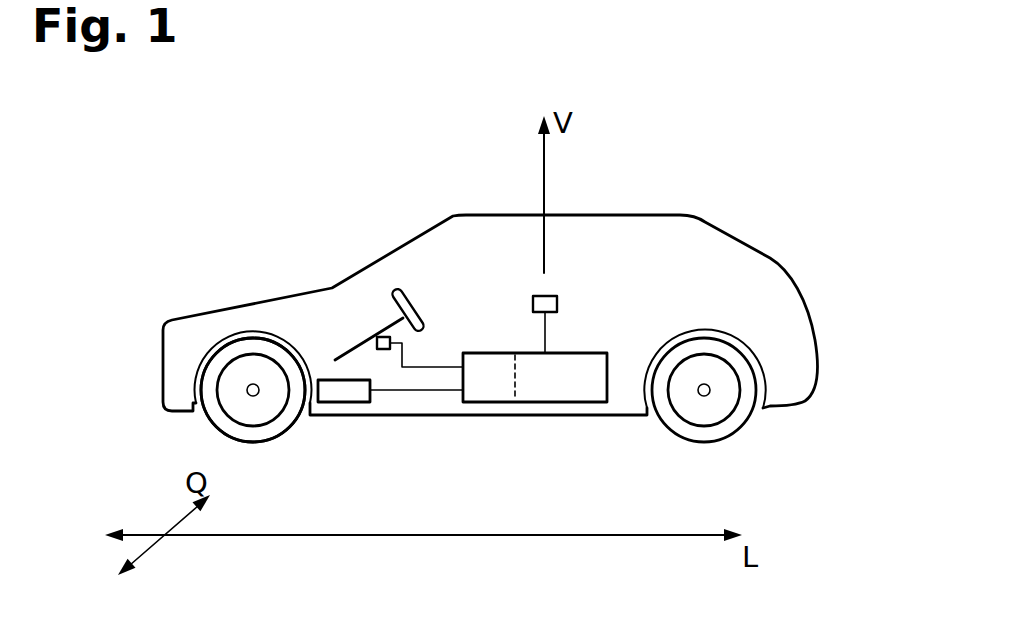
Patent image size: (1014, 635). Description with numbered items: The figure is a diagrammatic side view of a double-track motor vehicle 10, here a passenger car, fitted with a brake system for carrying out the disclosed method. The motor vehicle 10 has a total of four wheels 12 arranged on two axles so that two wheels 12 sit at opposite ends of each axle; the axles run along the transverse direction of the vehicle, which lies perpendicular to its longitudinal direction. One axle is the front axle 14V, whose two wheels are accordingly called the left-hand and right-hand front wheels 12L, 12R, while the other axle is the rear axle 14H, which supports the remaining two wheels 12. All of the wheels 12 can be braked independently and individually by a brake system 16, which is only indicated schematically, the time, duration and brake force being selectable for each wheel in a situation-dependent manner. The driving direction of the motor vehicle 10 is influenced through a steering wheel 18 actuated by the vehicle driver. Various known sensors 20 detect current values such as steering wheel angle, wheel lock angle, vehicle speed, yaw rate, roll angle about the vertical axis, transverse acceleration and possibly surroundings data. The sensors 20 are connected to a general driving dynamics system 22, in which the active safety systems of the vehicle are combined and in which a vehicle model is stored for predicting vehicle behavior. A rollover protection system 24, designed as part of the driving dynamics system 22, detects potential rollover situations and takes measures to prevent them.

The motor vehicle 10 is at (210, 150).
The wheel 12 is at (732, 423).
The left-hand front wheel 12L is at (220, 418).
The right-hand front wheel 12R is at (305, 425).
The front axle 14V is at (247, 390).
The rear axle 14H is at (712, 390).
The brake system 16 is at (330, 377).
The steering wheel 18 is at (399, 295).
The sensors 20 is at (537, 293).
The driving dynamics system 22 is at (553, 387).
The rollover protection system 24 is at (490, 387).